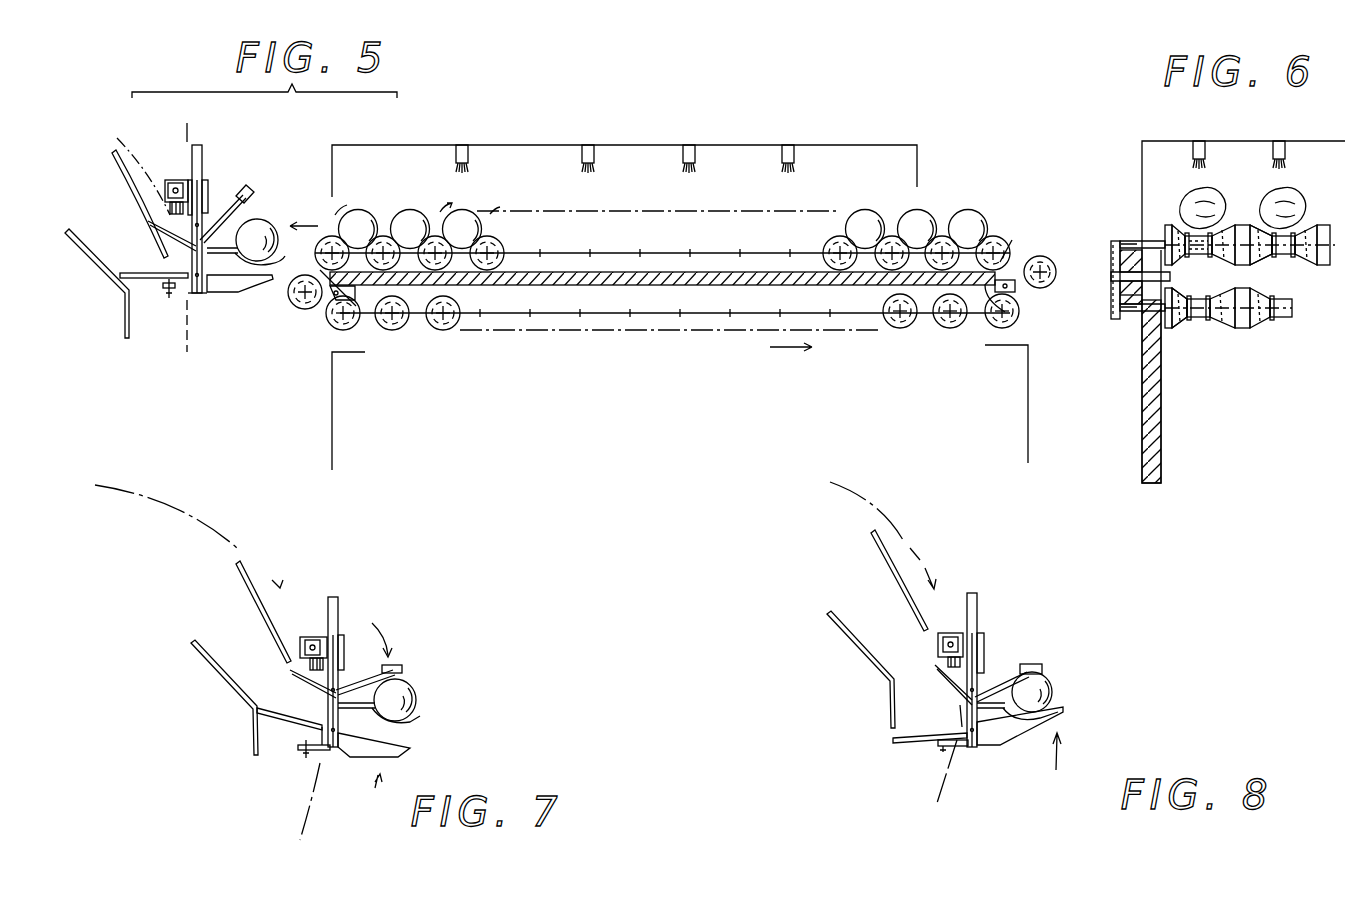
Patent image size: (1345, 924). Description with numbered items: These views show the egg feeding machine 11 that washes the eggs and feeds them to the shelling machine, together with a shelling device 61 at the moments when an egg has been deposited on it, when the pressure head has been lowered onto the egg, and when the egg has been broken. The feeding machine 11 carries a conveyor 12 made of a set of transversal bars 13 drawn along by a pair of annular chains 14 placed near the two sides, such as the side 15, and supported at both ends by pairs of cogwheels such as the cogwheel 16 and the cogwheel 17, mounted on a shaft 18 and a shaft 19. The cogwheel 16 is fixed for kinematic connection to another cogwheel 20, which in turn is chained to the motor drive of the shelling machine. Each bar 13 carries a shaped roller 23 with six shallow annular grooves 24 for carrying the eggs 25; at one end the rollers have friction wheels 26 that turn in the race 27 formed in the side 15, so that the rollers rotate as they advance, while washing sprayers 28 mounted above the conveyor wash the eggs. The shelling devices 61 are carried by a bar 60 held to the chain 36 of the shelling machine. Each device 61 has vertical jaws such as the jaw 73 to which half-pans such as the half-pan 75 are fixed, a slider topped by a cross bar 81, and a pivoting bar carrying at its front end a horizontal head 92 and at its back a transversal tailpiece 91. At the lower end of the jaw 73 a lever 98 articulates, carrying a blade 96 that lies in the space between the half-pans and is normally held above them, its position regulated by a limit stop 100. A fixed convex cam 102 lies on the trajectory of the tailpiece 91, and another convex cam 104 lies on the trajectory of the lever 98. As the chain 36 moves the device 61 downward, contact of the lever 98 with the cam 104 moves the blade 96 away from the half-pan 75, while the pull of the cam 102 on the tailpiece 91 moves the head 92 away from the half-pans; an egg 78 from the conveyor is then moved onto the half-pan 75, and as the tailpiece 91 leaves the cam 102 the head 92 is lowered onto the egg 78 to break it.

In FIG. 5, the washing and feeding machine 11 is at (645, 129).
In FIG. 6, the washing and feeding machine 11 is at (1222, 137).
In FIG. 5, the conveyor 12 is at (722, 248).
In FIG. 5, the transversal bars 13 is at (440, 322).
In FIG. 6, the transversal bars 13 is at (1325, 248).
In FIG. 5, the annular chains 14 is at (567, 313).
In FIG. 6, the annular chains 14 is at (1141, 250).
In FIG. 6, the side 15 is at (1146, 464).
In FIG. 5, the cogwheel 16 is at (322, 300).
In FIG. 6, the cogwheel 16 is at (1123, 320).
In FIG. 5, the cogwheel 17 is at (980, 290).
In FIG. 5, the shaft 18 is at (337, 298).
In FIG. 6, the shaft 18 is at (1112, 263).
In FIG. 5, the shaft 19 is at (1014, 282).
In FIG. 6, the cogwheel 20 is at (1112, 298).
In FIG. 6, the shaped roller 23 is at (1243, 326).
In FIG. 6, the annular grooves 24 is at (1287, 254).
In FIG. 5, the eggs 25 is at (962, 214).
In FIG. 6, the eggs 25 is at (1280, 192).
In FIG. 6, the friction wheels 26 is at (1170, 320).
In FIG. 6, the race 27 is at (1156, 240).
In FIG. 5, the washing sprayers 28 is at (466, 162).
In FIG. 6, the washing sprayers 28 is at (1279, 135).
In FIG. 5, the chain 36 is at (120, 132).
In FIG. 7, the chain 36 is at (124, 488).
In FIG. 8, the chain 36 is at (868, 500).
In FIG. 5, the bar 60 is at (170, 180).
In FIG. 7, the bar 60 is at (306, 636).
In FIG. 8, the bar 60 is at (951, 636).
In FIG. 5, the shelling device 61 is at (191, 134).
In FIG. 7, the shelling device 61 is at (366, 612).
In FIG. 8, the shelling device 61 is at (1013, 609).
In FIG. 5, the vertical jaw 73 is at (210, 296).
In FIG. 7, the vertical jaw 73 is at (337, 757).
In FIG. 5, the half-pan 75 is at (261, 248).
In FIG. 7, the half-pan 75 is at (421, 716).
In FIG. 8, the half-pan 75 is at (1060, 712).
In FIG. 5, the egg 78 is at (259, 220).
In FIG. 7, the egg 78 is at (415, 698).
In FIG. 8, the egg 78 is at (1052, 688).
In FIG. 5, the cross bar 81 is at (200, 152).
In FIG. 7, the cross bar 81 is at (339, 600).
In FIG. 8, the cross bar 81 is at (979, 600).
In FIG. 5, the tailpiece 91 is at (149, 223).
In FIG. 7, the tailpiece 91 is at (292, 672).
In FIG. 8, the tailpiece 91 is at (936, 665).
In FIG. 5, the head 92 is at (249, 188).
In FIG. 7, the head 92 is at (401, 670).
In FIG. 8, the head 92 is at (1034, 665).
In FIG. 5, the blade 96 is at (261, 283).
In FIG. 7, the blade 96 is at (403, 747).
In FIG. 8, the blade 96 is at (1010, 726).
In FIG. 5, the lever 98 is at (143, 283).
In FIG. 7, the lever 98 is at (285, 728).
In FIG. 8, the lever 98 is at (898, 743).
In FIG. 8, the limit stop 100 is at (947, 748).
In FIG. 5, the convex cam 102 is at (110, 158).
In FIG. 7, the convex cam 102 is at (248, 586).
In FIG. 8, the convex cam 102 is at (890, 561).
In FIG. 5, the convex cam 104 is at (90, 256).
In FIG. 7, the convex cam 104 is at (208, 661).
In FIG. 8, the convex cam 104 is at (866, 634).